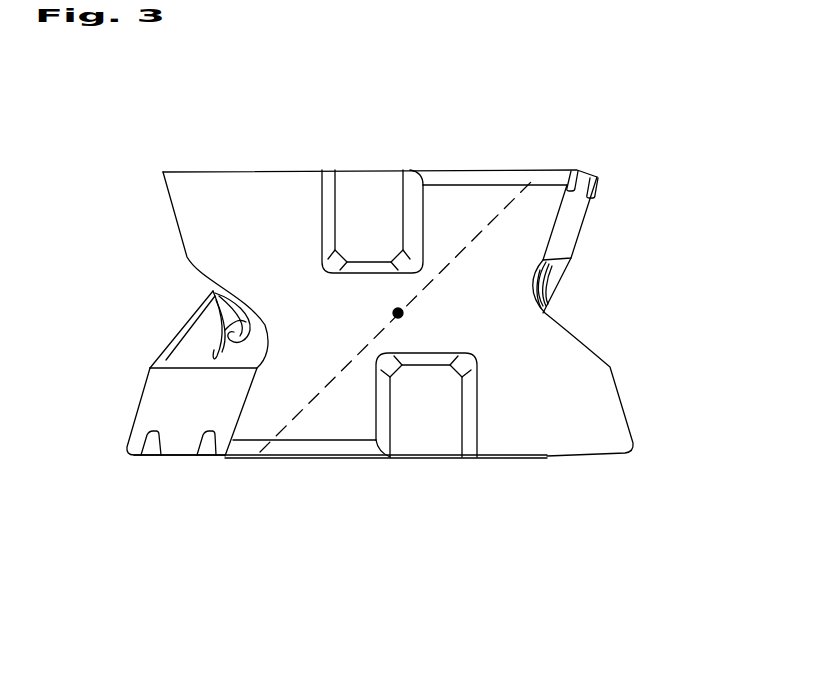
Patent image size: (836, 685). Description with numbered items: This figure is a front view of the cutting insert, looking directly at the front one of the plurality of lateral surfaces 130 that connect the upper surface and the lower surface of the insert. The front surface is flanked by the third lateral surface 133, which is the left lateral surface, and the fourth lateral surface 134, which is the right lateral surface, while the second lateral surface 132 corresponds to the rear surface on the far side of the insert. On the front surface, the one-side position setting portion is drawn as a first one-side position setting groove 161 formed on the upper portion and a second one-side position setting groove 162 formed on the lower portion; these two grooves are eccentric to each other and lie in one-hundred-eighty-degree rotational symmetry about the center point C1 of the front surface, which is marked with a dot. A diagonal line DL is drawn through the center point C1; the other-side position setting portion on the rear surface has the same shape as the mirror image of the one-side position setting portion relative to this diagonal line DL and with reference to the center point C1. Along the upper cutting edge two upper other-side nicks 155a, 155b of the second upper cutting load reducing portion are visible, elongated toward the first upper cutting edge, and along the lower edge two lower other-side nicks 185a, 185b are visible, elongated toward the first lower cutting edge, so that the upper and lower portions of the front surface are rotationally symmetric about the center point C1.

The lateral surfaces 130 is at (391, 313).
The second lateral surface 132 is at (317, 422).
The third lateral surface 133 is at (155, 410).
The fourth lateral surface 134 is at (577, 232).
The upper other-side nick 155a is at (592, 170).
The upper other-side nick 155b is at (575, 170).
The first one-side position setting groove 161 is at (372, 193).
The second one-side position setting groove 162 is at (428, 440).
The lower other-side nick 185a is at (146, 460).
The lower other-side nick 185b is at (203, 460).
The diagonal line DL is at (482, 230).
The center point C1 is at (398, 313).